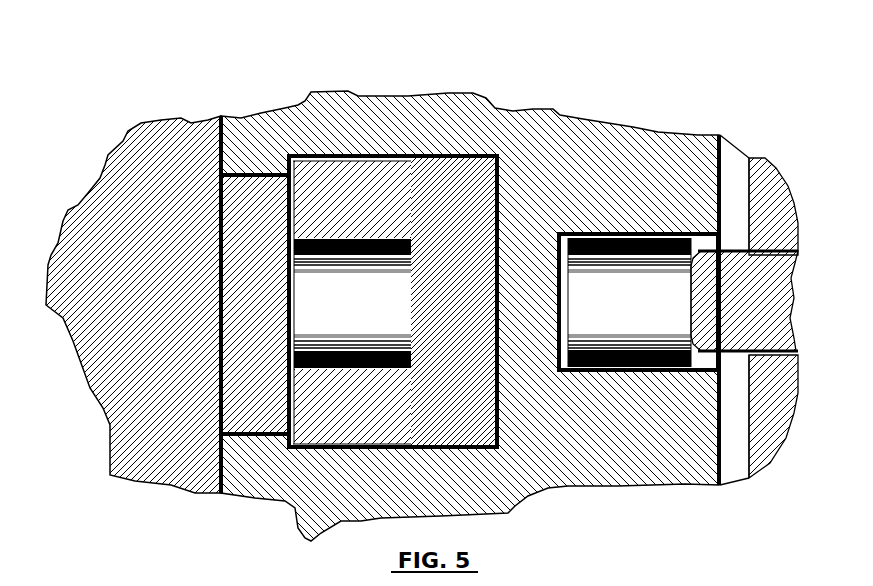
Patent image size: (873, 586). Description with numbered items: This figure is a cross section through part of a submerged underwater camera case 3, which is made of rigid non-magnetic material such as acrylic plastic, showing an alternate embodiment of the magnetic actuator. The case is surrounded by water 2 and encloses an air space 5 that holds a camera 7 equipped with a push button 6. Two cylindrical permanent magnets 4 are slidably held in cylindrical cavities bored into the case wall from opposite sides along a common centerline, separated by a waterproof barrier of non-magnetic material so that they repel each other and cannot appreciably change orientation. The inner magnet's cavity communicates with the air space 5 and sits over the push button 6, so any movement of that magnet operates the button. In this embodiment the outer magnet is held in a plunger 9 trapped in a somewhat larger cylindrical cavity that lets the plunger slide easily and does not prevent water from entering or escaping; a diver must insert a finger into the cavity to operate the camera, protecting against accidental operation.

The water 2 is at (83, 233).
The underwater camera case 3 is at (305, 192).
The cylindrical permanent magnets 4 is at (350, 229).
The air space 5 is at (720, 197).
The push button 6 is at (725, 247).
The camera 7 is at (770, 190).
The plunger 9 is at (278, 142).